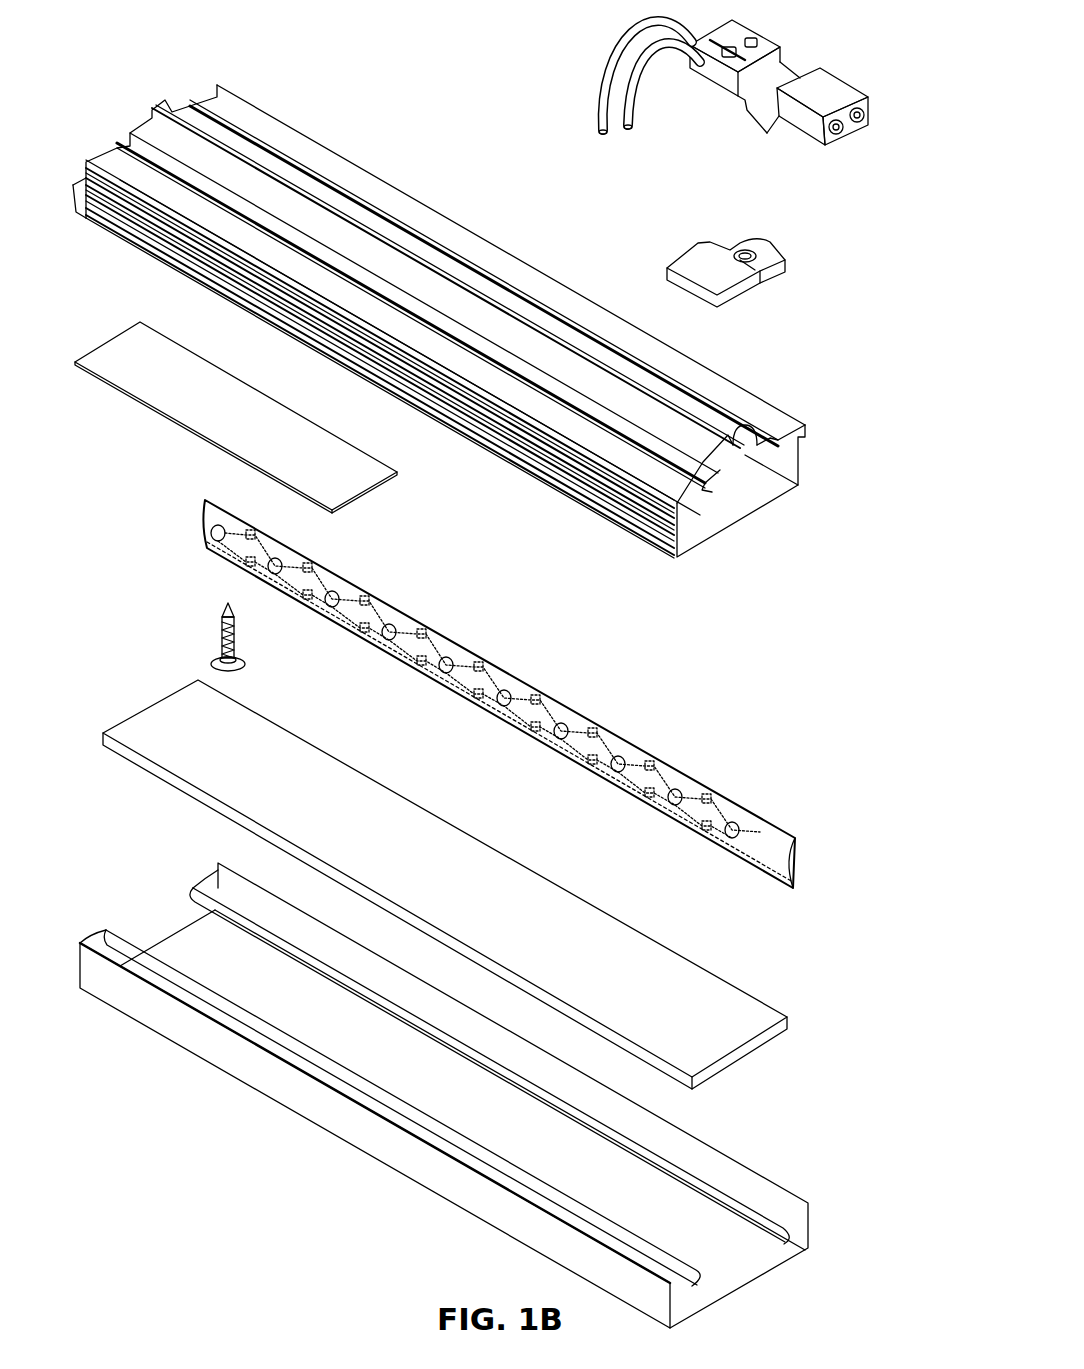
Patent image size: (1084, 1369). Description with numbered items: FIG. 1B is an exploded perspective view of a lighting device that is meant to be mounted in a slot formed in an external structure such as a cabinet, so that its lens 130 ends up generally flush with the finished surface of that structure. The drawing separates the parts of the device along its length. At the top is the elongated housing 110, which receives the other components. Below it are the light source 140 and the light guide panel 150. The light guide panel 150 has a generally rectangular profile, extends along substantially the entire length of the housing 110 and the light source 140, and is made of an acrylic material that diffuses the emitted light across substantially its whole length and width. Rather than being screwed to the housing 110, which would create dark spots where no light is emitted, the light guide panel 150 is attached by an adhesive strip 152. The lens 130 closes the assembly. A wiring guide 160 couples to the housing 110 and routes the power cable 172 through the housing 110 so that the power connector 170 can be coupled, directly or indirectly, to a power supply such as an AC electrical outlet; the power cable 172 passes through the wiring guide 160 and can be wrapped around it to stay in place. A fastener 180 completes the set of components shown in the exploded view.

The housing 110 is at (752, 412).
The lens 130 is at (773, 1210).
The light source 140 is at (740, 826).
The light guide panel 150 is at (745, 1015).
The adhesive strip 152 is at (128, 373).
The wiring guide 160 is at (770, 253).
The power connector 170 is at (812, 72).
The power cable 172 is at (600, 36).
The fastener 180 is at (215, 620).